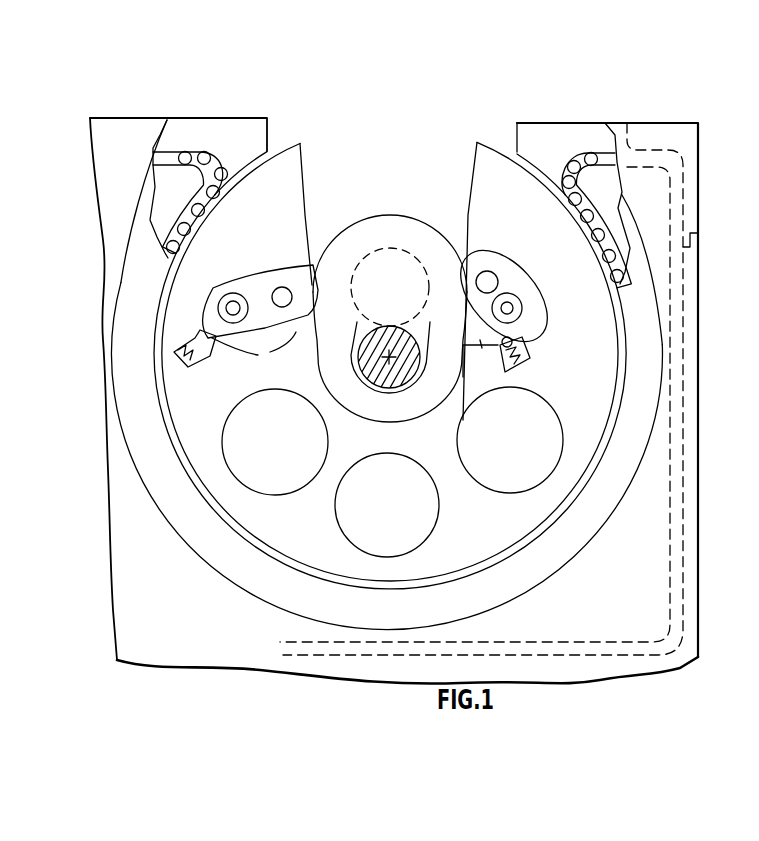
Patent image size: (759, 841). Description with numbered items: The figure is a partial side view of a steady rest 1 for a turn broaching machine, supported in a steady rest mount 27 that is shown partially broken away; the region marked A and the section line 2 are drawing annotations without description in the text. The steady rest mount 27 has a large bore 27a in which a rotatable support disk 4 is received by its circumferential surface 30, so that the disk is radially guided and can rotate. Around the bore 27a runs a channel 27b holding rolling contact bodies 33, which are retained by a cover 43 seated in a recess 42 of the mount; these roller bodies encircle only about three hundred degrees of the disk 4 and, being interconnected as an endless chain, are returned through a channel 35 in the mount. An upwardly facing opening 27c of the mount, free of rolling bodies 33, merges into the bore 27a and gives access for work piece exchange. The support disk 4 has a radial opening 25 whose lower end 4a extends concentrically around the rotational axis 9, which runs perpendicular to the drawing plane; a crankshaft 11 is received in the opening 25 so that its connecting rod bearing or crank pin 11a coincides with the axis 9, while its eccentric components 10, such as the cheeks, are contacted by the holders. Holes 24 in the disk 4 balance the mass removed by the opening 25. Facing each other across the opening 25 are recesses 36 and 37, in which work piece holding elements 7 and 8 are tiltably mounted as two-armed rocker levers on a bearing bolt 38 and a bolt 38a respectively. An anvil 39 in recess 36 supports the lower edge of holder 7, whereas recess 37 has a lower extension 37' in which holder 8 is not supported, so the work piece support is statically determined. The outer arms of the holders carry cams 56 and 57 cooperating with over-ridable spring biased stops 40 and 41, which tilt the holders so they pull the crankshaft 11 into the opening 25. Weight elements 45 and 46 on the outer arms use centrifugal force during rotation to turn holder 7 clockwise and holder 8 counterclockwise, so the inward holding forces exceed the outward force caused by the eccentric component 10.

The steady rest 1 is at (720, 162).
The section line 2 is at (282, 245).
The rotatable support device 4 is at (480, 177).
The lower end of radial opening 4a is at (425, 408).
The work piece holding element 7 is at (312, 258).
The work piece holding element 8 is at (447, 223).
The rotational axis 9 is at (381, 362).
The eccentric component 10 is at (412, 228).
The crankshaft 11 is at (378, 200).
The connecting rod bearing or crank pin 11a is at (410, 370).
The holes 24 is at (288, 485).
The radial opening 25 is at (343, 177).
The steady rest mount 27 is at (645, 540).
The bore 27a is at (558, 512).
The channel 27b is at (596, 205).
The upwardly facing opening 27c is at (272, 138).
The circumferential surface 30 is at (490, 147).
The rolling contact bodies 33 is at (592, 156).
The channel 35 is at (677, 447).
The recess 36 is at (253, 270).
The recess 37 is at (504, 284).
The lower extension 37' is at (480, 358).
The bearing bolt 38 is at (273, 310).
The bolt 38a is at (490, 283).
The anvil 39 is at (287, 327).
The spring biased stop 40 is at (176, 347).
The spring biased stop 41 is at (530, 357).
The recess 42 is at (612, 218).
The cover 43 is at (568, 560).
The weight element 45 is at (228, 298).
The weight element 46 is at (512, 305).
The cam 56 is at (215, 330).
The cam 57 is at (520, 330).
The assembly A is at (287, 135).